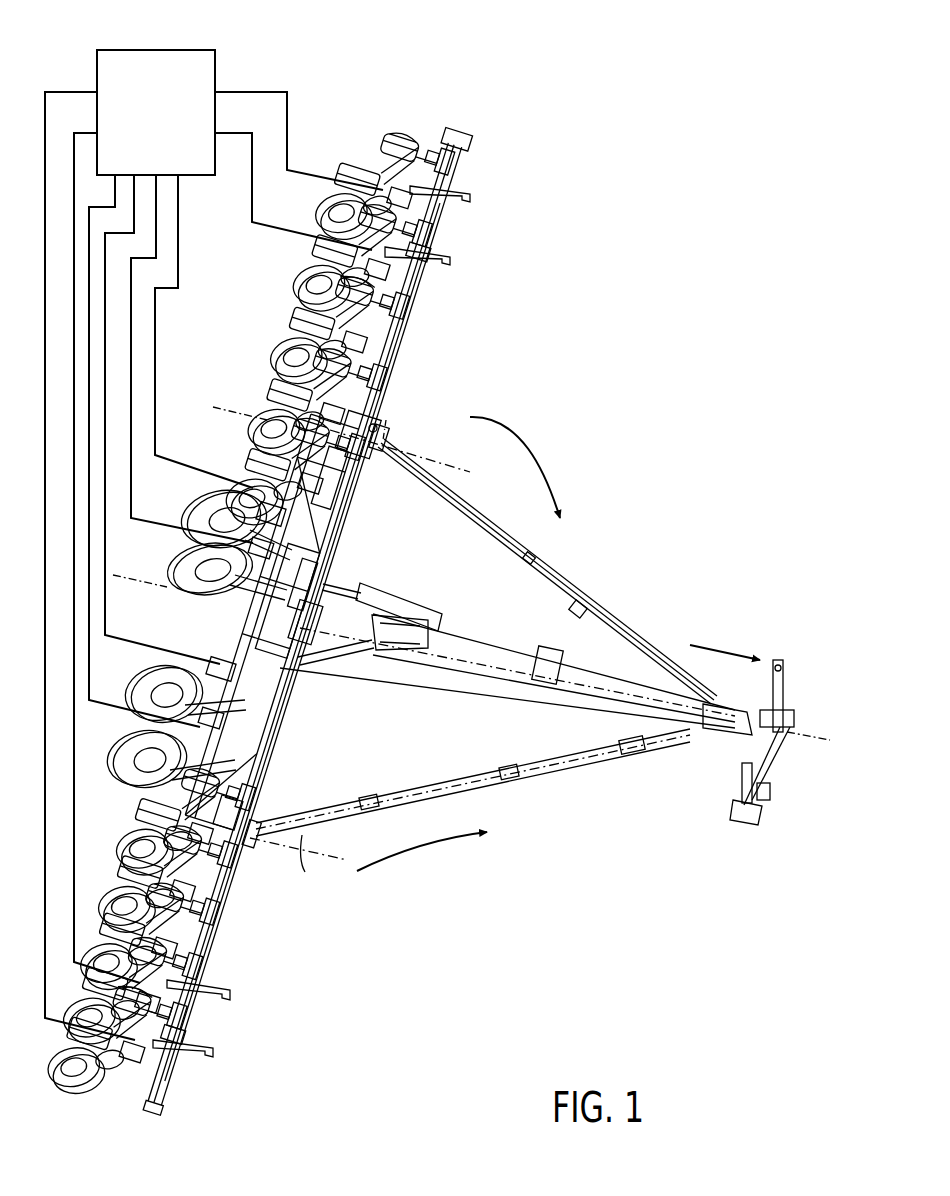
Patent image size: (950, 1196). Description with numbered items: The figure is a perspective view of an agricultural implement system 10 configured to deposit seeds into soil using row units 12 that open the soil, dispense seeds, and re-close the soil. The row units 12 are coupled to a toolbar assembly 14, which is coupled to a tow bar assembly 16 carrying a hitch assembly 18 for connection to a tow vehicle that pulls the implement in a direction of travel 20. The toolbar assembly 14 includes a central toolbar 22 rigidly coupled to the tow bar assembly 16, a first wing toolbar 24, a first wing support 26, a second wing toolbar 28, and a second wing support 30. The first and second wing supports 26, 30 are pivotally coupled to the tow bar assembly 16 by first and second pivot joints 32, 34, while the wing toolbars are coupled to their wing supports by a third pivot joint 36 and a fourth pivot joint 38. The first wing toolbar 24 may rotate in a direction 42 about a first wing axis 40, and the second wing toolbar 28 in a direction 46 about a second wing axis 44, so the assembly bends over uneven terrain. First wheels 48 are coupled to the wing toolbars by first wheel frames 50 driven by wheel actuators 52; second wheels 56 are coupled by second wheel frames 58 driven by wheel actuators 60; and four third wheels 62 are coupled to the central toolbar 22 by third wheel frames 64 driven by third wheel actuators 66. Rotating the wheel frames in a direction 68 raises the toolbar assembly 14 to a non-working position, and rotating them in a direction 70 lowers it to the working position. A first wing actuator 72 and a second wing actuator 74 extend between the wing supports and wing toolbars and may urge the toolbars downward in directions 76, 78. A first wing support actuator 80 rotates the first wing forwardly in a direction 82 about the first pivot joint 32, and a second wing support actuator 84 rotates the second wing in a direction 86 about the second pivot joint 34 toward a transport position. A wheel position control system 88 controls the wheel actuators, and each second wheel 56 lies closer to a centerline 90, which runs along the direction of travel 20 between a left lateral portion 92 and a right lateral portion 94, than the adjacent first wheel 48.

The agricultural implement system 10 is at (615, 257).
The row unit 12 is at (258, 445).
The toolbar assembly 14 is at (218, 390).
The tow bar assembly 16 is at (625, 688).
The hitch assembly 18 is at (790, 807).
The direction of travel 20 is at (723, 652).
The central toolbar 22 is at (283, 667).
The first wing toolbar 24 is at (422, 217).
The first wing support 26 is at (347, 470).
The second wing toolbar 28 is at (175, 1015).
The second wing support 30 is at (262, 743).
The first pivot joint 32 is at (330, 582).
The second pivot joint 34 is at (345, 660).
The third pivot joint 36 is at (365, 422).
The fourth pivot joint 38 is at (247, 810).
The first wing axis 40 is at (466, 467).
The direction 42 is at (452, 473).
The second wing axis 44 is at (308, 842).
The direction 46 is at (320, 845).
The first wheel 48 is at (340, 203).
The first wheel frame 50 is at (407, 193).
The wheel actuator 52 is at (400, 197).
The second wheel 56 is at (313, 267).
The second wheel frame 58 is at (350, 262).
The wheel actuator 60 is at (378, 257).
The third wheel 62 is at (212, 497).
The third wheel frame 64 is at (233, 533).
The third wheel actuator 66 is at (255, 543).
The direction 68 is at (228, 952).
The direction 70 is at (388, 413).
The first wing actuator 72 is at (373, 430).
The second wing actuator 74 is at (233, 840).
The direction 76 is at (238, 388).
The direction 78 is at (133, 797).
The first wing support actuator 80 is at (397, 605).
The direction 82 is at (518, 457).
The second wing support actuator 84 is at (367, 667).
The direction 86 is at (420, 863).
The wheel position control system 88 is at (155, 50).
The centerline 90 is at (805, 742).
The left lateral portion 92 is at (615, 428).
The right lateral portion 94 is at (507, 913).